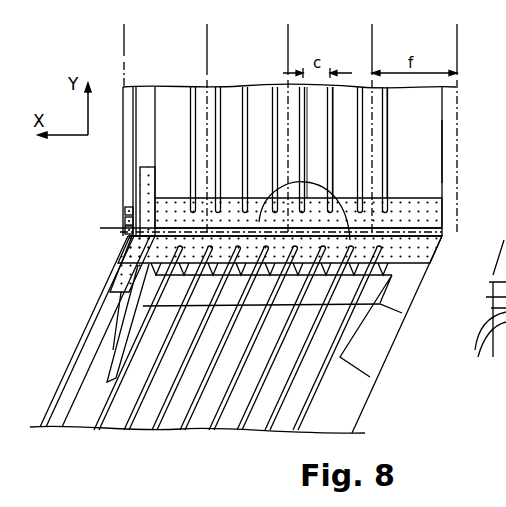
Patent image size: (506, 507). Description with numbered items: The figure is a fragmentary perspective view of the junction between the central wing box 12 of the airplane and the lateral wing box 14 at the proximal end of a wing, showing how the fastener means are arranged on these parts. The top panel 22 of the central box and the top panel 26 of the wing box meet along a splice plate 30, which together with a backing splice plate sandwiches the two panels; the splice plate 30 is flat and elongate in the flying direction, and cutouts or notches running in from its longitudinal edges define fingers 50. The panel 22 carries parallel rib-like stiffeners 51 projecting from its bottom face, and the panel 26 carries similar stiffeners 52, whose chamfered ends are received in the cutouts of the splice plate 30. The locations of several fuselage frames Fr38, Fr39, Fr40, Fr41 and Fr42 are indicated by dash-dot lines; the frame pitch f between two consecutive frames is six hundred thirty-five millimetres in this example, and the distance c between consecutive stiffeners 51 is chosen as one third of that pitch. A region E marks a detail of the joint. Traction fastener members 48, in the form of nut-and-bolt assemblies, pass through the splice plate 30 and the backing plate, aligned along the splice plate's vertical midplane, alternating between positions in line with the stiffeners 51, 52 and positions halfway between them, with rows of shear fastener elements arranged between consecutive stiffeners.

The central wing box 12 is at (440, 183).
The lateral wing box 14 is at (78, 371).
The top panel of the central box 22 is at (407, 123).
The top panel of the lateral box 26 is at (365, 348).
The splice plate 30 is at (417, 243).
The fastener members 48 is at (484, 308).
The fingers 50 is at (172, 284).
The stiffeners 51 is at (304, 113).
The stiffeners 52 is at (192, 406).
The detail region E is at (312, 187).
The frame Fr38 is at (448, 128).
The frame Fr39 is at (363, 128).
The frame Fr40 is at (280, 128).
The frame Fr41 is at (198, 128).
The frame Fr42 is at (115, 55).